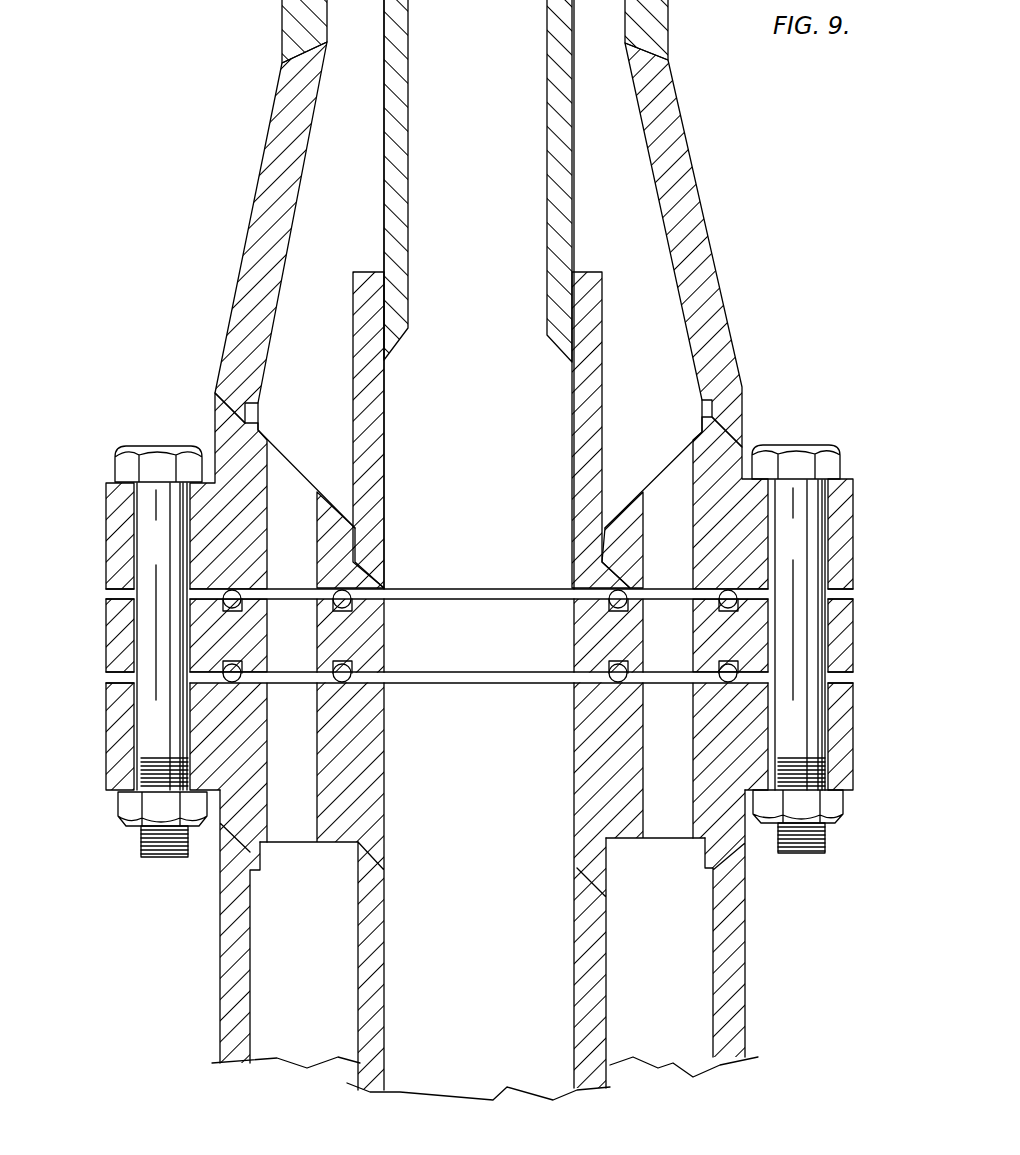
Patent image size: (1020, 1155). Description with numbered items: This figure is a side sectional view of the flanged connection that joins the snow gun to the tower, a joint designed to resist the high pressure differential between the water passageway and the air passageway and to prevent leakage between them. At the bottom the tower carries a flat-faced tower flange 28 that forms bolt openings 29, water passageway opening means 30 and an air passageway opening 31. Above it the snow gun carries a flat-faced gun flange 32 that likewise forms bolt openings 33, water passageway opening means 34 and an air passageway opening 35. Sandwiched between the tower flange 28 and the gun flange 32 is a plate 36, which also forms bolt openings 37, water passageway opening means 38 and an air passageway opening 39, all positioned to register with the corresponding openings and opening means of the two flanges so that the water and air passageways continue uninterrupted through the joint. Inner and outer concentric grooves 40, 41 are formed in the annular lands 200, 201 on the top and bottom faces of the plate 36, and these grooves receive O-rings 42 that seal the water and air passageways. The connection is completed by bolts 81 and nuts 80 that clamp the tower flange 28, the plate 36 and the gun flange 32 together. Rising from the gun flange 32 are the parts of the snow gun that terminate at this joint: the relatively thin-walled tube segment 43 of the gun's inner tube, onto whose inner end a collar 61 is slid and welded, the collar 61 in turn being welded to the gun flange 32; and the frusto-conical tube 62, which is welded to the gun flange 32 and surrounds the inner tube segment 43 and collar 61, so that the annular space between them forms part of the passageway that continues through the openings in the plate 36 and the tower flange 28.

The tower flange 28 is at (853, 724).
The bolt openings 29 is at (822, 772).
The water passageway opening means 30 is at (668, 822).
The air passageway opening 31 is at (503, 767).
The gun flange 32 is at (853, 532).
The bolt openings 33 is at (818, 508).
The water passageway opening means 34 is at (666, 490).
The air passageway opening 35 is at (495, 537).
The plate 36 is at (853, 624).
The bolt openings 37 is at (822, 650).
The water passageway opening means 38 is at (685, 654).
The air passageway opening 39 is at (510, 651).
The inner concentric groove 40 is at (344, 610).
The outer concentric groove 41 is at (236, 611).
The O-rings 42 is at (233, 590).
The thin-walled tube segment 43 is at (572, 170).
The collar 61 is at (603, 385).
The frusto-conical tube 62 is at (718, 264).
The nuts 80 is at (124, 806).
The bolts 81 is at (145, 848).
The annular land 200 is at (388, 608).
The annular land 201 is at (194, 628).